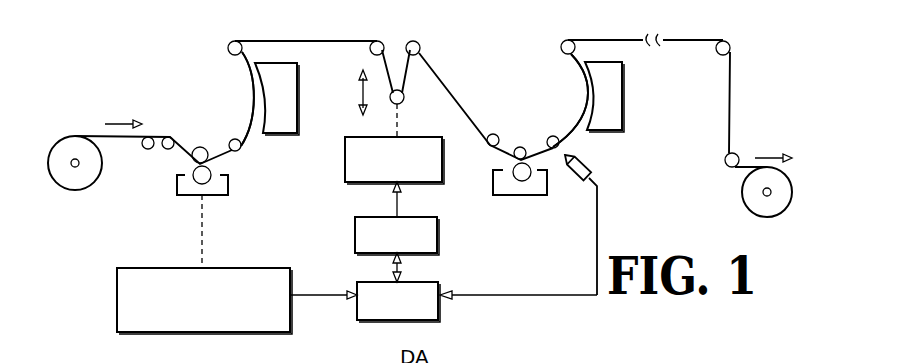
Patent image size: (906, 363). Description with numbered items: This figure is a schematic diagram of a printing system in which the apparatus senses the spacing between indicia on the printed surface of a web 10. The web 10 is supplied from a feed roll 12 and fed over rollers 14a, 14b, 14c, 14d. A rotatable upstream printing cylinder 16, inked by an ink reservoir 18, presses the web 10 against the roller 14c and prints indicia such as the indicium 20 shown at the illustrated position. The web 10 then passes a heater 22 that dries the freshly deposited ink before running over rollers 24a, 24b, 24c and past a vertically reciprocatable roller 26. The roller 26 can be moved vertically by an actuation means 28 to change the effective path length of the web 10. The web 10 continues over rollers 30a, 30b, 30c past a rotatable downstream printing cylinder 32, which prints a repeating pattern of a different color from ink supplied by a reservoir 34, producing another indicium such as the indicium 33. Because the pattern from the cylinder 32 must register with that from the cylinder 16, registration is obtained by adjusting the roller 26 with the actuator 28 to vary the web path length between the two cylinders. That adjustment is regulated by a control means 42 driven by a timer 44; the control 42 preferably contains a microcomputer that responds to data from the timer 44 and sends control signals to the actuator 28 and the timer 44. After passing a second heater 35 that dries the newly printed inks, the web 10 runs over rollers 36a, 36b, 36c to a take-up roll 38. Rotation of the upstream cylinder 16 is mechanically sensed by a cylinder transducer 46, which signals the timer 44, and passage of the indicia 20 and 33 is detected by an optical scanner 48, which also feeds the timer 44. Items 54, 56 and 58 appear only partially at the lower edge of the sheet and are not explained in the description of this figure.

The web 10 is at (113, 138).
The feed roll 12 is at (73, 135).
The roller 14a is at (148, 150).
The roller 14b is at (170, 137).
The roller 14c is at (203, 147).
The roller 14d is at (240, 152).
The upstream printing cylinder 16 is at (212, 168).
The ink reservoir 18 is at (220, 196).
The indicium 20 is at (258, 138).
The heater 22 is at (298, 92).
The roller 24a is at (236, 41).
The roller 24b is at (384, 25).
The roller 24c is at (412, 41).
The vertically reciprocatable roller 26 is at (402, 100).
The actuation means 28 is at (369, 182).
The roller 30a is at (508, 100).
The roller 30b is at (521, 147).
The roller 30c is at (565, 110).
The downstream printing cylinder 32 is at (523, 197).
The indicium 33 is at (574, 136).
The reservoir 34 is at (538, 197).
The heater 35 is at (623, 103).
The roller 36a is at (568, 40).
The roller 36b is at (738, 29).
The roller 36c is at (725, 160).
The take-up roll 38 is at (765, 217).
The control means 42 is at (438, 237).
The timer 44 is at (429, 320).
The cylinder transducer 46 is at (117, 294).
The optical scanner 48 is at (585, 164).
The web segment 54 is at (355, 355).
The web segment 56 is at (535, 355).
The web segment 58 is at (634, 355).